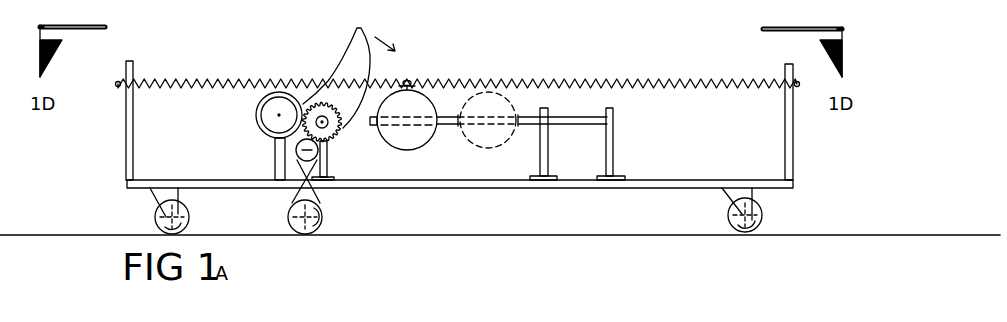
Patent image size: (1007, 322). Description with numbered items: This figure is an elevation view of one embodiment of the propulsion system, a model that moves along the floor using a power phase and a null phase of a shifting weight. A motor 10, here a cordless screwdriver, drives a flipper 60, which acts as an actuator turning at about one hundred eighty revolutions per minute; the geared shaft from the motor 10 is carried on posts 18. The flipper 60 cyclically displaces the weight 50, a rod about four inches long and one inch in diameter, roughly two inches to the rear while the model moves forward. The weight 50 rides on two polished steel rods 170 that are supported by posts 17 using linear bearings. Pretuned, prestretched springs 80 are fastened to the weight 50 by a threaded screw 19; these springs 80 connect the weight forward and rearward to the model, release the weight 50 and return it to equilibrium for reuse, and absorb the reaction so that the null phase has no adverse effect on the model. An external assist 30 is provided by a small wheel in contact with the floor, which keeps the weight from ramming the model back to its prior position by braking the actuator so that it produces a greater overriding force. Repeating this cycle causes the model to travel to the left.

The motor 10 is at (254, 106).
The posts 18 is at (275, 156).
The springs 80 is at (197, 80).
The flipper 60 is at (347, 52).
The threaded screw 19 is at (408, 82).
The weight 50 is at (482, 148).
The polished steel rods 170 is at (590, 108).
The posts 17 is at (607, 155).
The external assist 30 is at (330, 215).